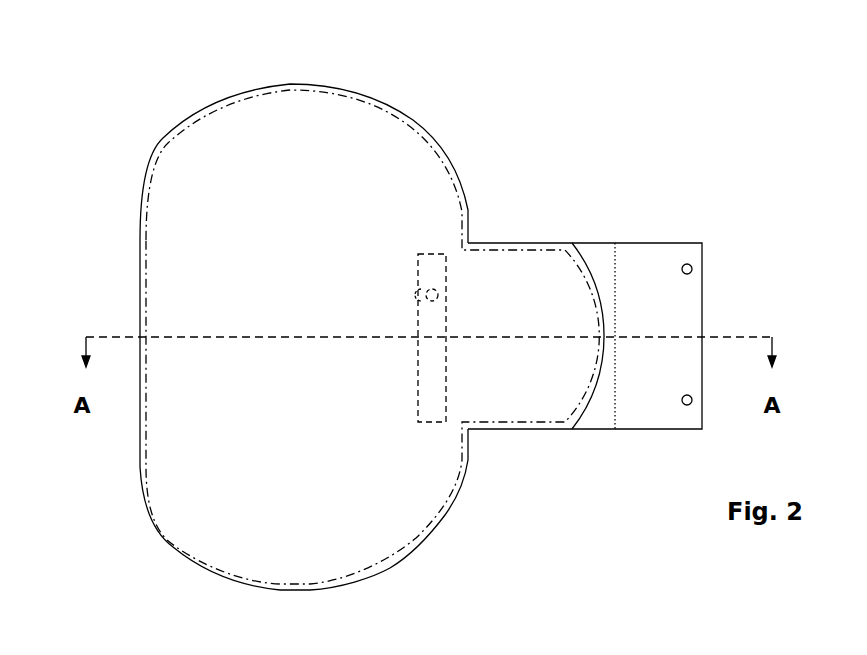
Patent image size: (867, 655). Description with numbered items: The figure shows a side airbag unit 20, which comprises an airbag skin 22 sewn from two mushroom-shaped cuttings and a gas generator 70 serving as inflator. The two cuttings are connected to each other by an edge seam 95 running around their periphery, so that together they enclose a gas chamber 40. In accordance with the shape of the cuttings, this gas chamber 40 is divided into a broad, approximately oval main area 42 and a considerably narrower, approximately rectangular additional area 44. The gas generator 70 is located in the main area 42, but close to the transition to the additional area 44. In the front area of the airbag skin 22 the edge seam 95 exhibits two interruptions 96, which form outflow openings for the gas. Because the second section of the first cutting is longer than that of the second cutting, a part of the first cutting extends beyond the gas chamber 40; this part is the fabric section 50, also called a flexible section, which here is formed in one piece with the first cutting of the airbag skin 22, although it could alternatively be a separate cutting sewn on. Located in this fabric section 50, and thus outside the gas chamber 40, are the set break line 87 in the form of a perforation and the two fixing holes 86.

The side airbag unit 20 is at (528, 147).
The airbag skin 22 is at (402, 520).
The gas chamber 40 is at (283, 133).
The main area 42 is at (212, 533).
The additional area 44 is at (550, 393).
The fabric section 50 is at (637, 412).
The gas generator 70 is at (437, 398).
The fixing holes 86 is at (693, 266).
The set break line 87 is at (615, 267).
The edge seam 95 is at (360, 575).
The interruptions 96 is at (146, 268).